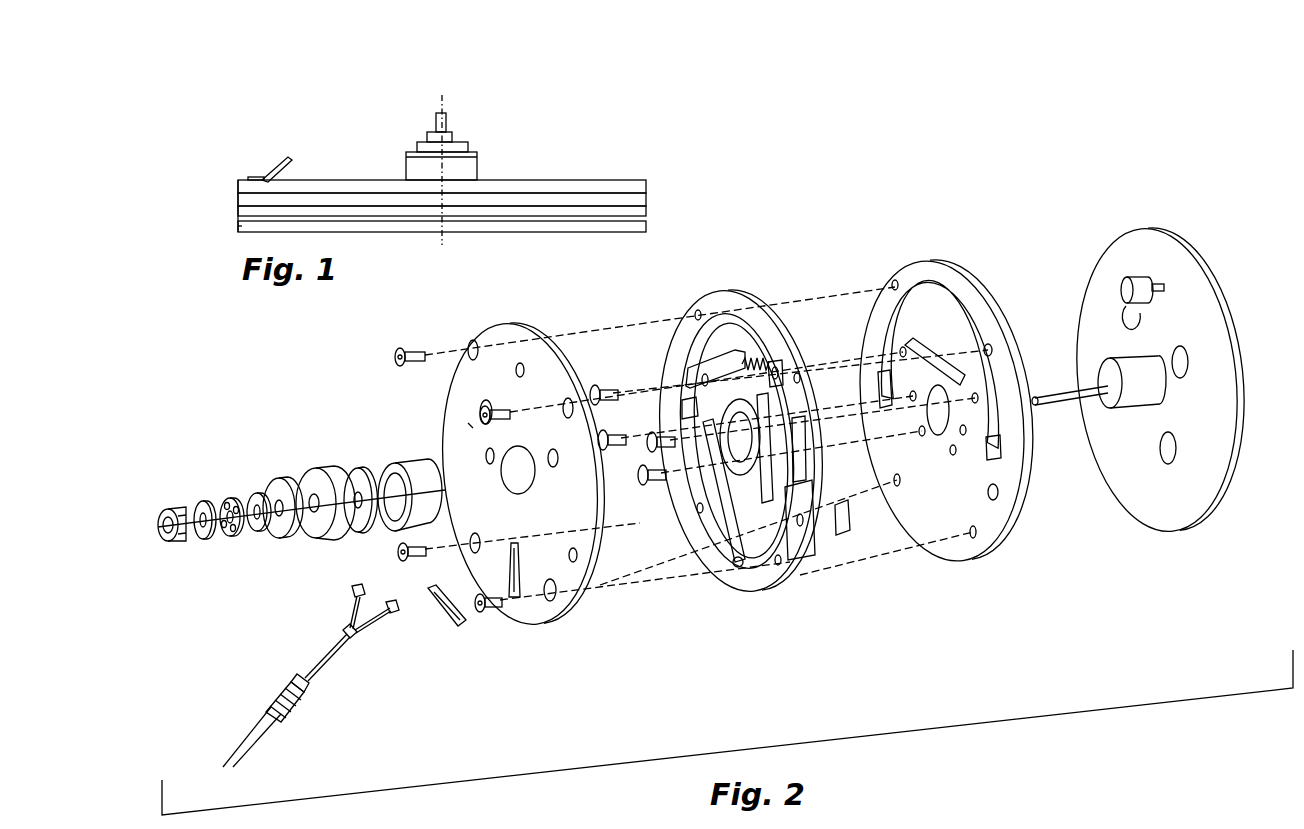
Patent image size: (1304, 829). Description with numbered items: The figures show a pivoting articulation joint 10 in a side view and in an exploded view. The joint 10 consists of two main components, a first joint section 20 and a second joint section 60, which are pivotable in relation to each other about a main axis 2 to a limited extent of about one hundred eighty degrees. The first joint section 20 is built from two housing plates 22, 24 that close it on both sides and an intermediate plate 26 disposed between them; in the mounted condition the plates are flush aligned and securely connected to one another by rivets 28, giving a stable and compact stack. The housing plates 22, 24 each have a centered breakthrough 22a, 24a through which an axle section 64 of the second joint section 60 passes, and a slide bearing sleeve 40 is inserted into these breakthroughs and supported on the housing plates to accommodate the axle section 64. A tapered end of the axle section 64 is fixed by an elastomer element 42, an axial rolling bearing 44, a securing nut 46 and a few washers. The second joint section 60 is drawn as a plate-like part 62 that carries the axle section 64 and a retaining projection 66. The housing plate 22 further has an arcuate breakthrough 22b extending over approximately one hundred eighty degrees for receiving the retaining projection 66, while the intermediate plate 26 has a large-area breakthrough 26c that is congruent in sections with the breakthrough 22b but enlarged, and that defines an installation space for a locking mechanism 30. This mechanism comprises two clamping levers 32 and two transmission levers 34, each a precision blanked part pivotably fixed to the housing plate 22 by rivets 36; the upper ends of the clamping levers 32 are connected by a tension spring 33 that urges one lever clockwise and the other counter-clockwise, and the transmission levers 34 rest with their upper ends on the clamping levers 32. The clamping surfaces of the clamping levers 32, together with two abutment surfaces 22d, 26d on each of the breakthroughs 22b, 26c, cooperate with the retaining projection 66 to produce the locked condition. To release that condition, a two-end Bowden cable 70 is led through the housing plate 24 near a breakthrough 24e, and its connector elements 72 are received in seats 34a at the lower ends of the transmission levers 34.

In FIG. 1, the main axis 2 is at (437, 108).
In FIG. 2, the main axis 2 is at (470, 425).
In FIG. 1, the pivoting articulation joint 10 is at (614, 160).
In FIG. 1, the first joint section 20 is at (230, 196).
In FIG. 1, the housing plate 22 is at (641, 210).
In FIG. 2, the housing plate 22 is at (967, 580).
In FIG. 2, the centered breakthrough 22a is at (960, 335).
In FIG. 2, the arcuate breakthrough 22b is at (928, 310).
In FIG. 2, the abutment surfaces 22d is at (882, 368).
In FIG. 1, the housing plate 24 is at (641, 186).
In FIG. 2, the housing plate 24 is at (550, 640).
In FIG. 2, the centered breakthrough 24a is at (519, 448).
In FIG. 2, the breakthrough 24e is at (512, 600).
In FIG. 1, the intermediate plate 26 is at (641, 197).
In FIG. 2, the intermediate plate 26 is at (770, 608).
In FIG. 2, the large-area breakthrough 26c is at (790, 540).
In FIG. 2, the abutment surfaces 26d is at (688, 398).
In FIG. 2, the rivets 28 is at (410, 352).
In FIG. 2, the locking mechanism 30 is at (808, 475).
In FIG. 2, the clamping levers 32 is at (718, 360).
In FIG. 2, the tension spring 33 is at (752, 358).
In FIG. 2, the transmission levers 34 is at (728, 540).
In FIG. 2, the seat 34a is at (818, 540).
In FIG. 2, the rivets 36 is at (650, 490).
In FIG. 2, the slide bearing sleeve 40 is at (408, 470).
In FIG. 1, the elastomer element 42 is at (477, 165).
In FIG. 2, the elastomer element 42 is at (322, 485).
In FIG. 1, the axial rolling bearing 44 is at (468, 147).
In FIG. 2, the axial rolling bearing 44 is at (230, 500).
In FIG. 1, the securing nut 46 is at (452, 136).
In FIG. 2, the securing nut 46 is at (172, 510).
In FIG. 1, the second joint section 60 is at (230, 226).
In FIG. 2, the second joint section 60 is at (1232, 518).
In FIG. 1, the drive disc 62 is at (641, 221).
In FIG. 2, the drive disc 62 is at (1152, 552).
In FIG. 2, the axle section 64 is at (1122, 400).
In FIG. 2, the retaining projection 66 is at (1138, 285).
In FIG. 2, the Bowden cable 70 is at (328, 660).
In FIG. 2, the connector elements 72 is at (393, 613).